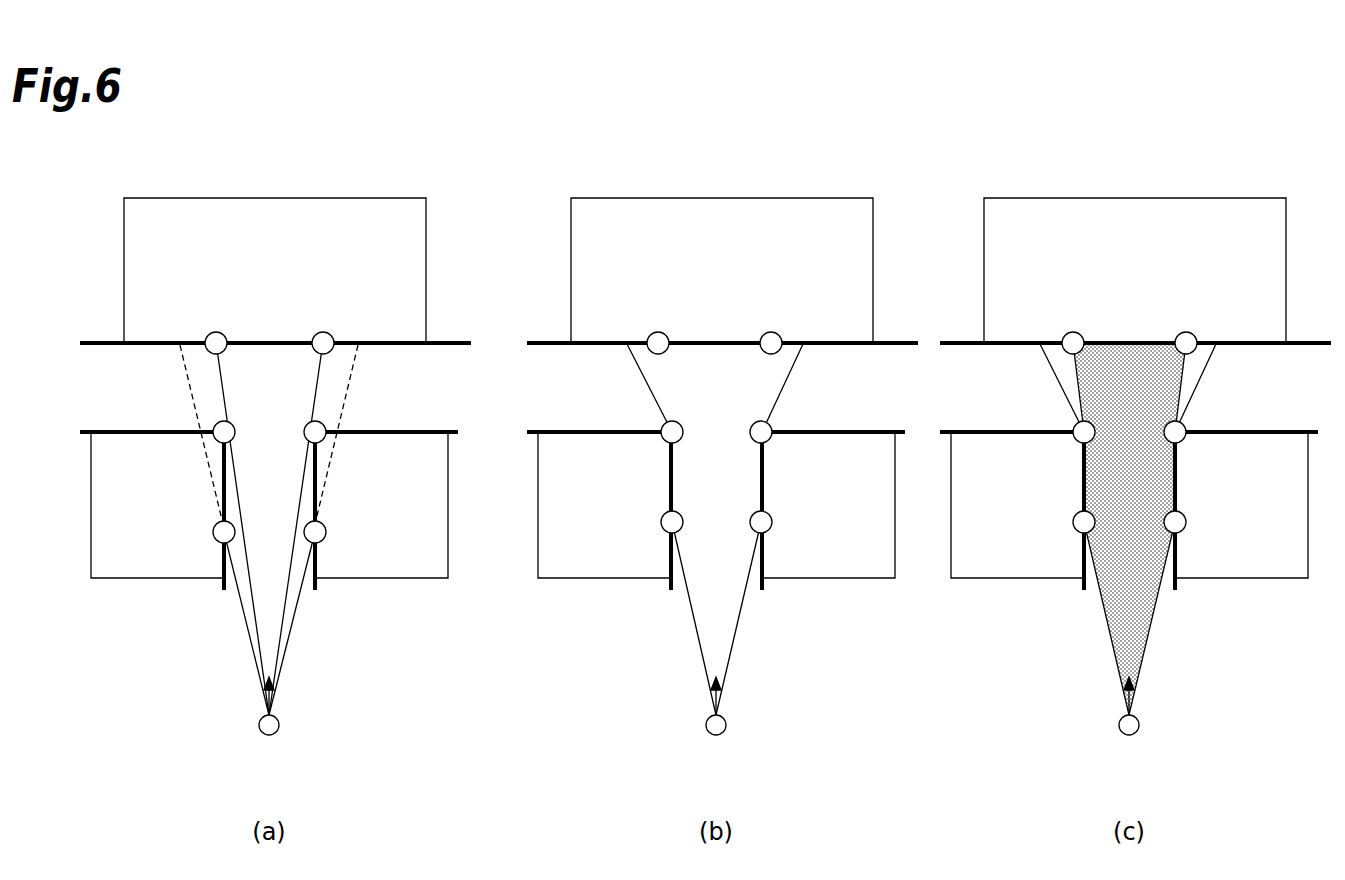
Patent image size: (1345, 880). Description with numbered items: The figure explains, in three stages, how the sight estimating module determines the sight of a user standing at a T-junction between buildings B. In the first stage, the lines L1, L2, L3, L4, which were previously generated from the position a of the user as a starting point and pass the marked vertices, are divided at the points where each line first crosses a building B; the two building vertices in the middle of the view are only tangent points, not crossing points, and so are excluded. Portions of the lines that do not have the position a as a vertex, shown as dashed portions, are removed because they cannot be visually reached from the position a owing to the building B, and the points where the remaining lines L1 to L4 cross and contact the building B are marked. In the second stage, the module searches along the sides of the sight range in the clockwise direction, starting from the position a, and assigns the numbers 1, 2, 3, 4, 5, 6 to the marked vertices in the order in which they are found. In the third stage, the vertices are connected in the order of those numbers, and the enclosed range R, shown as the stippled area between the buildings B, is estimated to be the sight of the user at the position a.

The building B is at (384, 562).
The position of the user a is at (699, 722).
The vertex number 1 is at (654, 533).
The vertex number 2 is at (654, 445).
The vertex number 3 is at (644, 330).
The vertex number 4 is at (758, 330).
The vertex number 5 is at (752, 445).
The vertex number 6 is at (752, 533).
The line L1 is at (248, 640).
The line L2 is at (248, 565).
The line L3 is at (274, 620).
The line L4 is at (288, 640).
The range R is at (1133, 630).